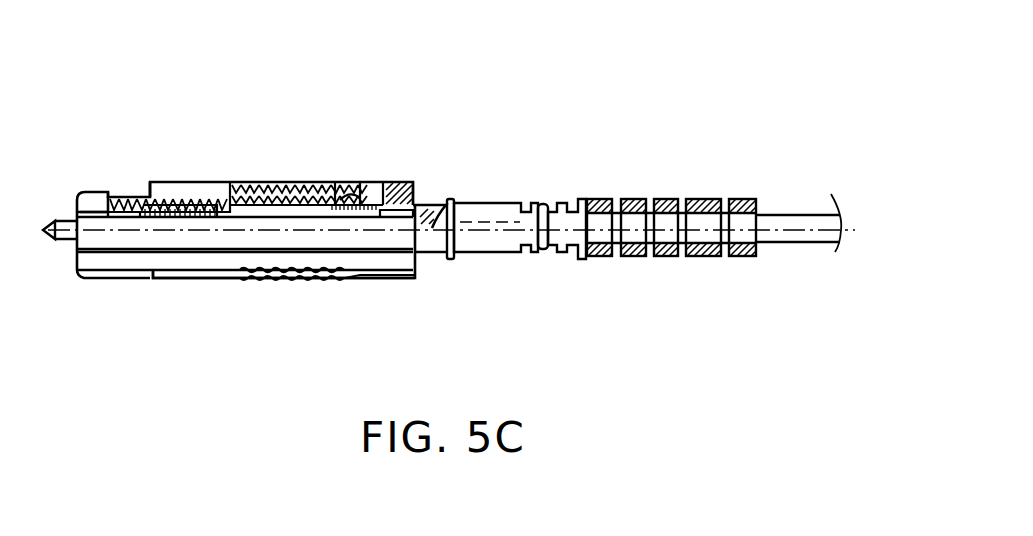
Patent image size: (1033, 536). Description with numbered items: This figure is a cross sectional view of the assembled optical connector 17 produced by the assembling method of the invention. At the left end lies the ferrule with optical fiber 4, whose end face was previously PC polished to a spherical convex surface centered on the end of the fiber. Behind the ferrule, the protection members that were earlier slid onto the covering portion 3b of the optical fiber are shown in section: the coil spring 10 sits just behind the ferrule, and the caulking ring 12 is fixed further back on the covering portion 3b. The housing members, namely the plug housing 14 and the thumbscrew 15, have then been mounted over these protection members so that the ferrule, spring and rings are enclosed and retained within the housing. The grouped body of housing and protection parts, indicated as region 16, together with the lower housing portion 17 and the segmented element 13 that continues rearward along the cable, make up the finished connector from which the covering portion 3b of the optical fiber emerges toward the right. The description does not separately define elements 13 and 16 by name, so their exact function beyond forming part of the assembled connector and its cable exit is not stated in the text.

The ferrule with optical fiber 4 is at (66, 212).
The coil spring 10 is at (170, 195).
The plug housing 14 is at (245, 200).
The thumbscrew 15 is at (320, 183).
The caulking ring 12 is at (373, 183).
The boot body 13 is at (505, 198).
The covering portion 3b is at (795, 217).
The connector assembly 16 is at (173, 288).
The optical connector 17 is at (158, 292).